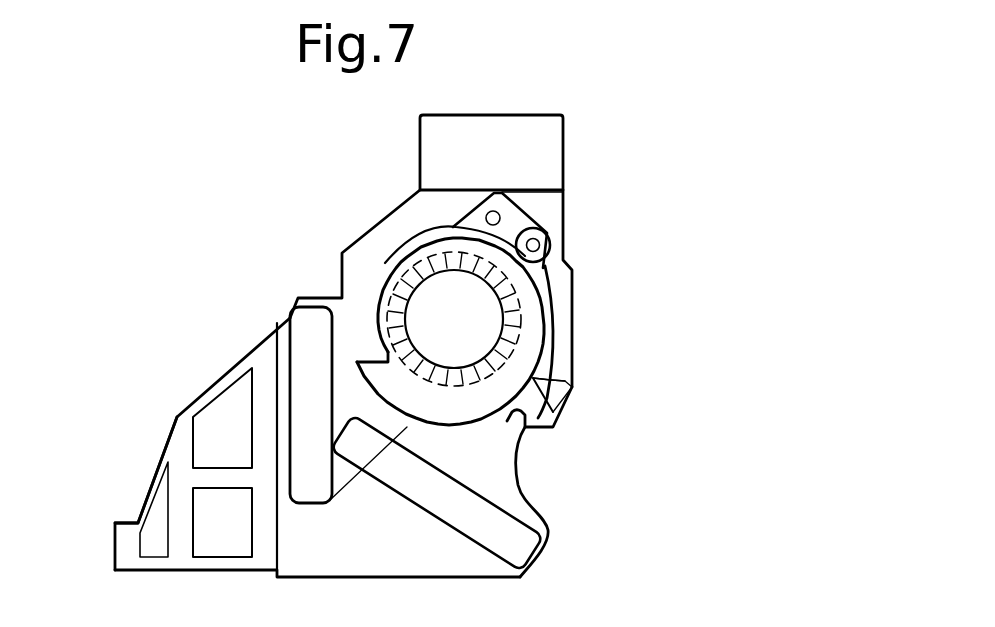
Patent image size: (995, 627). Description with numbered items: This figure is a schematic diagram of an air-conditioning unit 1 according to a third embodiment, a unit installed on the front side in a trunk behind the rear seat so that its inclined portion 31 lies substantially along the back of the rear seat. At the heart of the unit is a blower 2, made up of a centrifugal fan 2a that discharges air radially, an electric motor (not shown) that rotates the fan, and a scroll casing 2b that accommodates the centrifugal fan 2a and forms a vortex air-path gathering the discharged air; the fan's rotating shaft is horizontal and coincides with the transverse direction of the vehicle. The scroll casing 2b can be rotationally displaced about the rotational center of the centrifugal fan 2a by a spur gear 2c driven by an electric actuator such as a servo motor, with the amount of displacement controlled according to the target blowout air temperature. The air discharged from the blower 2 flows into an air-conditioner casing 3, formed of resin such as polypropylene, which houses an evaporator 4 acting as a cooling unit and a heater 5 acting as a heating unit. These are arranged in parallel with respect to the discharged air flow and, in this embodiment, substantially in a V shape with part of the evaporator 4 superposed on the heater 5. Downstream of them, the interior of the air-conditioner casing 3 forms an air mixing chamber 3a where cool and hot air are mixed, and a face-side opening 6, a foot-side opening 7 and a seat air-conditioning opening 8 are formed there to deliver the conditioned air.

The air-conditioning unit 1 is at (567, 140).
The blower 2 is at (567, 322).
The centrifugal fan 2a is at (500, 290).
The scroll casing 2b is at (573, 387).
The spur gear 2c is at (530, 223).
The air-conditioner casing 3 is at (525, 470).
The air mixing chamber 3a is at (182, 452).
The inclined portion of the air-conditioning unit 31 is at (145, 500).
The evaporator 4 is at (502, 532).
The heater 5 is at (312, 330).
The face-side opening 6 is at (222, 530).
The foot-side opening 7 is at (220, 418).
The seat air-conditioning opening 8 is at (155, 517).